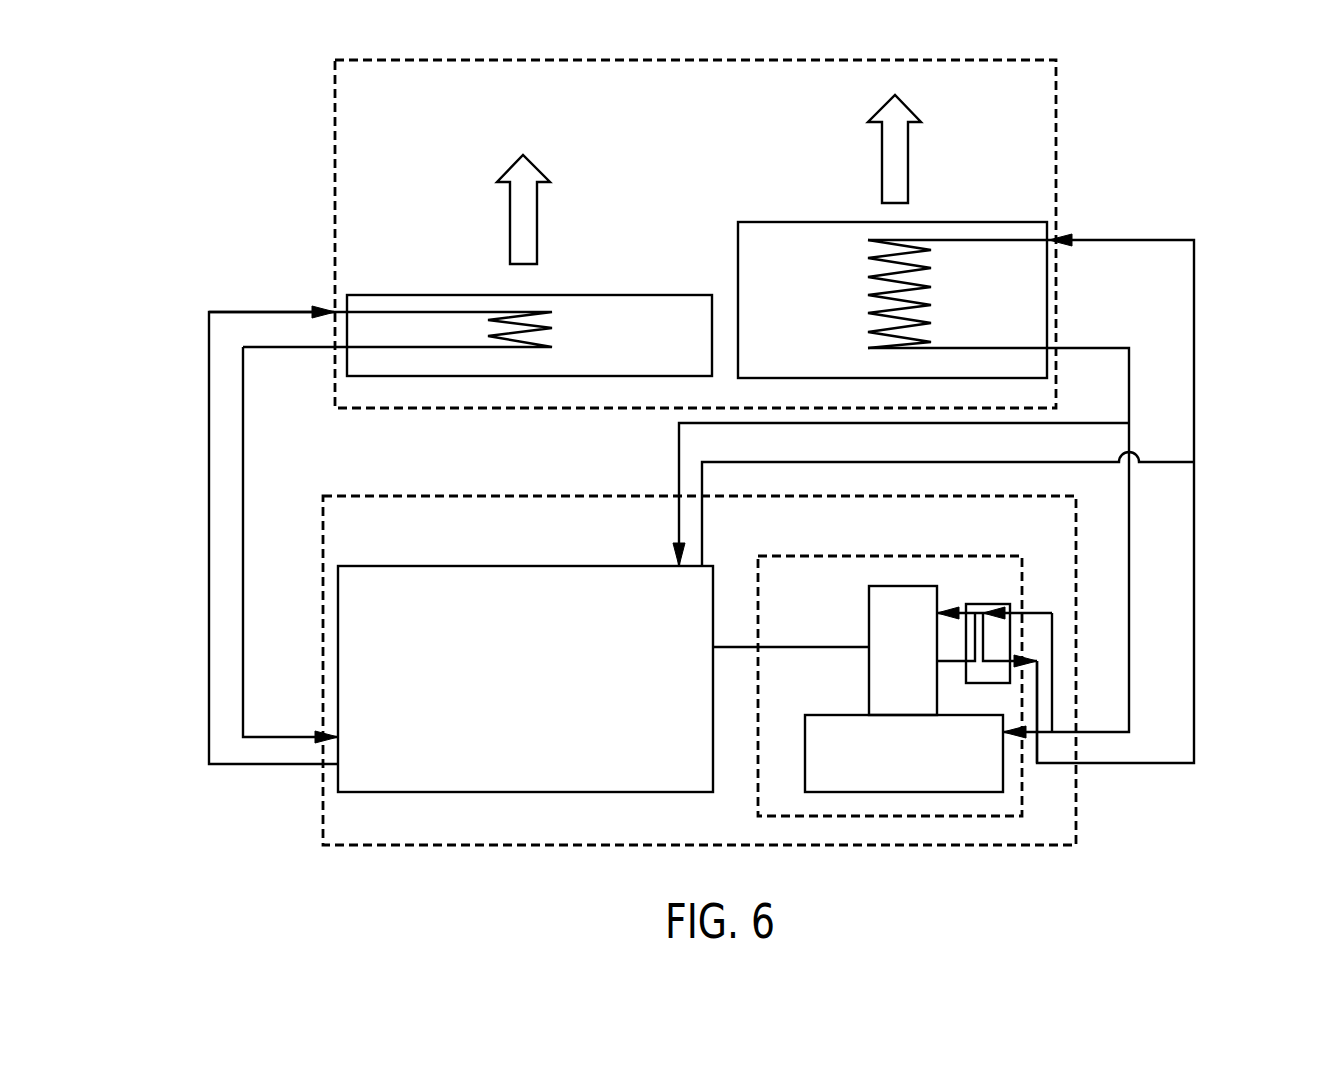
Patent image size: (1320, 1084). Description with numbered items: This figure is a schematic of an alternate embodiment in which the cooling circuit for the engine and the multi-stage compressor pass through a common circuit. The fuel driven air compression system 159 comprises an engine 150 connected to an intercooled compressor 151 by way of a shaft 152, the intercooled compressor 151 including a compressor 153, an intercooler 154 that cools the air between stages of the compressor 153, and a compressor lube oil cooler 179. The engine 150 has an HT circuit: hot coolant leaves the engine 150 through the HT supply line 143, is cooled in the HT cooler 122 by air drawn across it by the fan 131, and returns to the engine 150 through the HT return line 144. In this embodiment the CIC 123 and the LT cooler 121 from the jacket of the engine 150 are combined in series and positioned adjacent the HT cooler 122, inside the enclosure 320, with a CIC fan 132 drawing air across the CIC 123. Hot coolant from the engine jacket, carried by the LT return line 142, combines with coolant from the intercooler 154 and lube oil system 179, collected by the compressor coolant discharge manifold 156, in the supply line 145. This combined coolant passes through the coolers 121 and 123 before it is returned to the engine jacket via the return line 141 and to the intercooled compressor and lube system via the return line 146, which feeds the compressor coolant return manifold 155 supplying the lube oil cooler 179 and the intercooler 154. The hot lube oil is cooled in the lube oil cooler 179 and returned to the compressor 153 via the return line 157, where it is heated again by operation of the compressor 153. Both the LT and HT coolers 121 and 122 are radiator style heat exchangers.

The thermal module 320 is at (1060, 137).
The fan 131 is at (538, 228).
The CIC fan 132 is at (882, 165).
The HT cooler 122 is at (558, 343).
The LT cooler 121 is at (868, 332).
The compressor intercooling water cooler 123 is at (868, 277).
The HT supply line 143 is at (209, 402).
The HT return line 144 is at (243, 472).
The LT supply line 141 is at (679, 466).
The LT return line 142 is at (702, 540).
The supply line 145 is at (1194, 576).
The compressor coolant return line 146 is at (1129, 530).
The compressor coolant return manifold 155 is at (1052, 668).
The compressor coolant discharge manifold 156 is at (1038, 713).
The fuel driven air compression system 159 is at (441, 496).
The engine 150 is at (482, 566).
The intercooled compressor 151 is at (825, 556).
The shaft 152 is at (787, 646).
The compressor 153 is at (869, 668).
The intercooler 154 is at (917, 792).
The return line 157 is at (960, 592).
The compressor lube oil cooler 179 is at (984, 592).